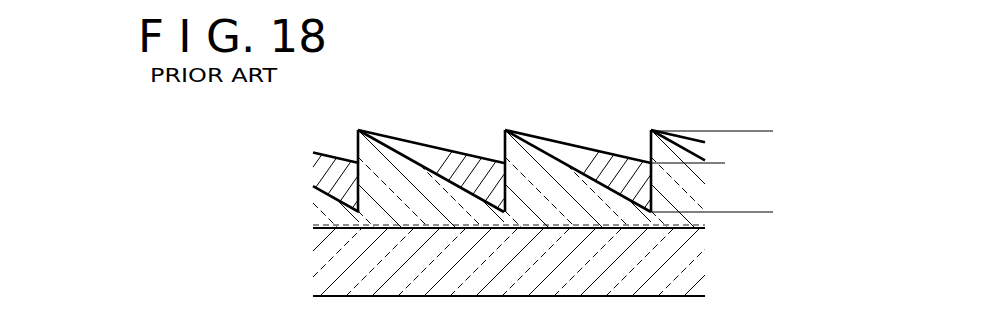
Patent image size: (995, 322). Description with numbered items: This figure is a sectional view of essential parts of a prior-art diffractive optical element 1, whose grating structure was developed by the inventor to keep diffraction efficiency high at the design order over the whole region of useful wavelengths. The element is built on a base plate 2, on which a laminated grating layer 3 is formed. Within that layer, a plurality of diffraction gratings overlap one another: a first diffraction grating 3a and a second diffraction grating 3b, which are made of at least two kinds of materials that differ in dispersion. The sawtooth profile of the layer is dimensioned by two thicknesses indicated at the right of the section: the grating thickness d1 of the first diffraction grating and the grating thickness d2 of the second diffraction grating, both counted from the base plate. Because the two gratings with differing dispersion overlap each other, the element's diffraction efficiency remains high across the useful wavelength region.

The transmissive substrate structure (prior art) 1 is at (604, 185).
The base substrate 2 is at (673, 272).
The sawtooth lens layer 3 is at (580, 151).
The first diffraction grating 3a is at (446, 198).
The second diffraction grating 3b is at (603, 153).
The grating thickness of the first diffraction grating d1 is at (763, 131).
The grating thickness of the second diffraction grating d2 is at (718, 163).